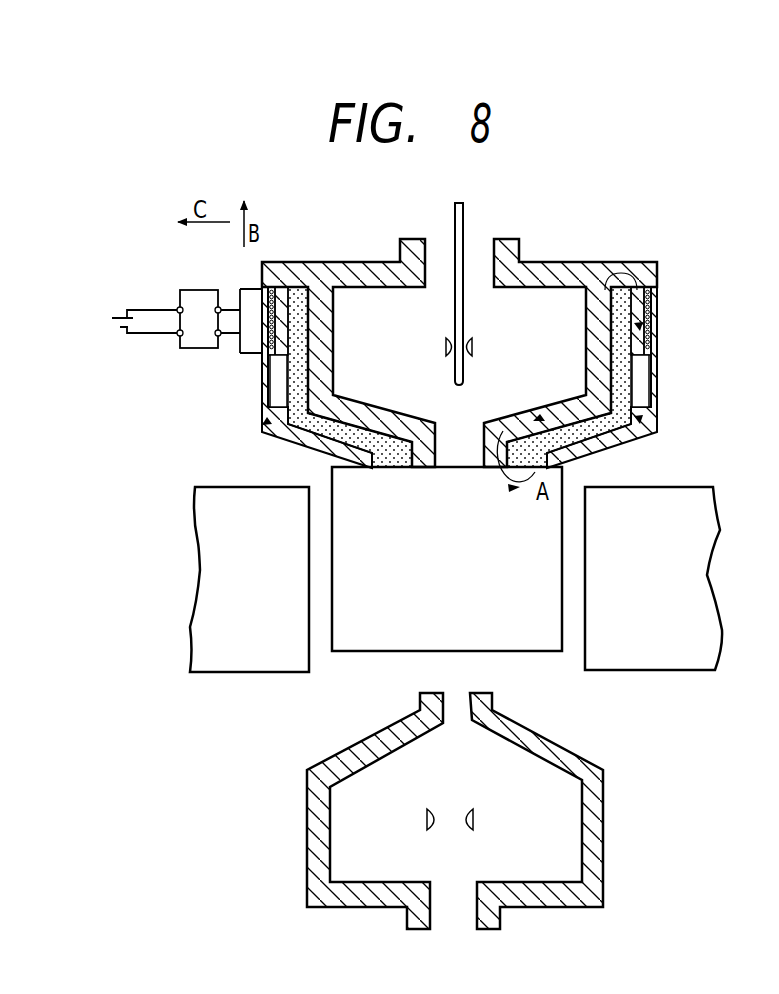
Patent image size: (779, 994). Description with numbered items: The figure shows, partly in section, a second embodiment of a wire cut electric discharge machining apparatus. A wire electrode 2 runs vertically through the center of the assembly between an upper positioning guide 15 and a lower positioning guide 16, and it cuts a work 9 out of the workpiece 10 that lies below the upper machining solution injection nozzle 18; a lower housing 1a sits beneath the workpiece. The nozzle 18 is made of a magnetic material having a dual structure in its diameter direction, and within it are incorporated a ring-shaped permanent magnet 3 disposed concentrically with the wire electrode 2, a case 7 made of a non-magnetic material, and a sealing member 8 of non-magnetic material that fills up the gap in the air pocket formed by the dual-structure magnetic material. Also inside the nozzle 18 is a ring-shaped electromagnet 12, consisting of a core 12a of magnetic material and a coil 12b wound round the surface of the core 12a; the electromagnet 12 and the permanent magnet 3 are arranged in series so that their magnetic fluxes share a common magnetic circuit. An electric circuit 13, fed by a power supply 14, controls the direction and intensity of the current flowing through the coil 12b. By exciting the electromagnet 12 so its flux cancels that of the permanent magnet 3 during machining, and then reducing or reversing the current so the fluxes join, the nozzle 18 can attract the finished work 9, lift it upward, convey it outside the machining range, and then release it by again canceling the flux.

The housing 1a is at (306, 838).
The wire electrode 2 is at (463, 238).
The permanent magnet 3 is at (273, 380).
The case 7 is at (267, 372).
The sealing member 8 is at (322, 430).
The work 9 is at (518, 652).
The workpiece 10 is at (258, 673).
The electromagnet 12 is at (510, 323).
The core 12a is at (285, 322).
The coil 12b is at (285, 343).
The electric circuit 13 is at (205, 350).
The power supply 14 is at (122, 338).
The upper positioning guide 15 is at (473, 347).
The lower positioning guide 16 is at (474, 820).
The machining solution injection nozzle 18 is at (250, 272).